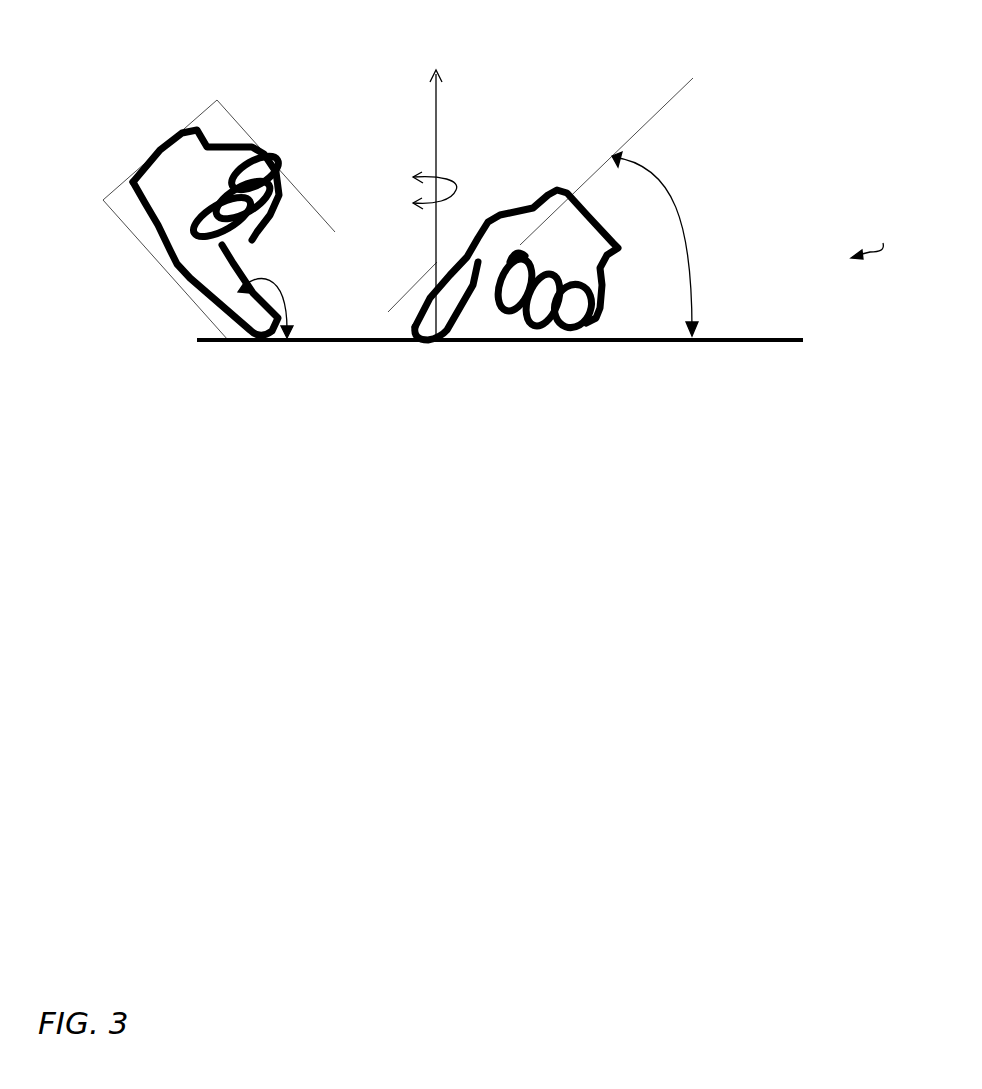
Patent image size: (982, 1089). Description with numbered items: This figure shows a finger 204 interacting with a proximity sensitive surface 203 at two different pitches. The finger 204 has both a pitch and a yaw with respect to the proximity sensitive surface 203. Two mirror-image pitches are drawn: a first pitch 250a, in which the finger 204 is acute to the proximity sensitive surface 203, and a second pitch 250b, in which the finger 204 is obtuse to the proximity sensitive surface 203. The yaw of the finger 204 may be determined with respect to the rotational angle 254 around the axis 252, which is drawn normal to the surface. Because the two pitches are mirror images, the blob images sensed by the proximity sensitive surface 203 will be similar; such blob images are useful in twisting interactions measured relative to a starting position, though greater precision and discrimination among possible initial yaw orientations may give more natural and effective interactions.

The proximity sensitive surface 203 is at (760, 338).
The finger 204 is at (157, 254).
The axis 252 is at (436, 120).
The rotational angle 254 is at (447, 177).
The first pitch 250a is at (709, 236).
The second pitch 250b is at (296, 305).